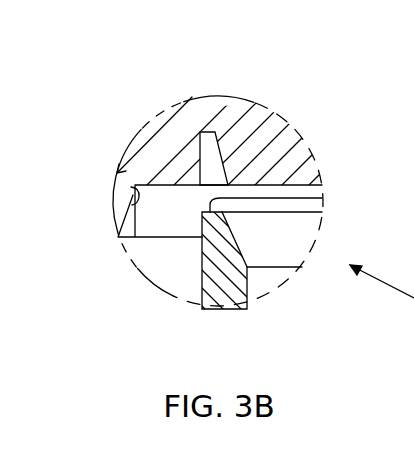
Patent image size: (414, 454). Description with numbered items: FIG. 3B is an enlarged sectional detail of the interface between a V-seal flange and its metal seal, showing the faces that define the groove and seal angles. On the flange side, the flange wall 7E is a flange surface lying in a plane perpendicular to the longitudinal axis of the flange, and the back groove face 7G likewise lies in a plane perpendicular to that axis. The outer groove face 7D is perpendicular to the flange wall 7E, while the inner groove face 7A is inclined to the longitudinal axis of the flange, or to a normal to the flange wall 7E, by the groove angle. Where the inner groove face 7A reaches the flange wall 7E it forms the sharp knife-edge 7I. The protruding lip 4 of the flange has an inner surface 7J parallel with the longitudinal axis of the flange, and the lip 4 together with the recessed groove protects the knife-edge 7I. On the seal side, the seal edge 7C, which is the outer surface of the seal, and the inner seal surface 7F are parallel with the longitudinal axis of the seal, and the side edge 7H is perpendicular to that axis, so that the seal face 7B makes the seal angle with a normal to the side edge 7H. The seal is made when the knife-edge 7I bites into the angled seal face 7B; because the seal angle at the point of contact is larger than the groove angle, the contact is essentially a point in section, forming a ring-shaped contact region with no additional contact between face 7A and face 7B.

The protruding lip 4 is at (122, 218).
The inner groove face 7A is at (221, 148).
The seal face 7B is at (236, 228).
The seal edge 7C is at (202, 268).
The outer groove face 7D is at (200, 155).
The flange wall 7E is at (160, 185).
The inner seal surface 7F is at (248, 293).
The back groove face 7G is at (205, 132).
The side edge 7H is at (322, 198).
The knife-edge 7I is at (226, 178).
The inner surface of the protruding lip 7J is at (131, 187).